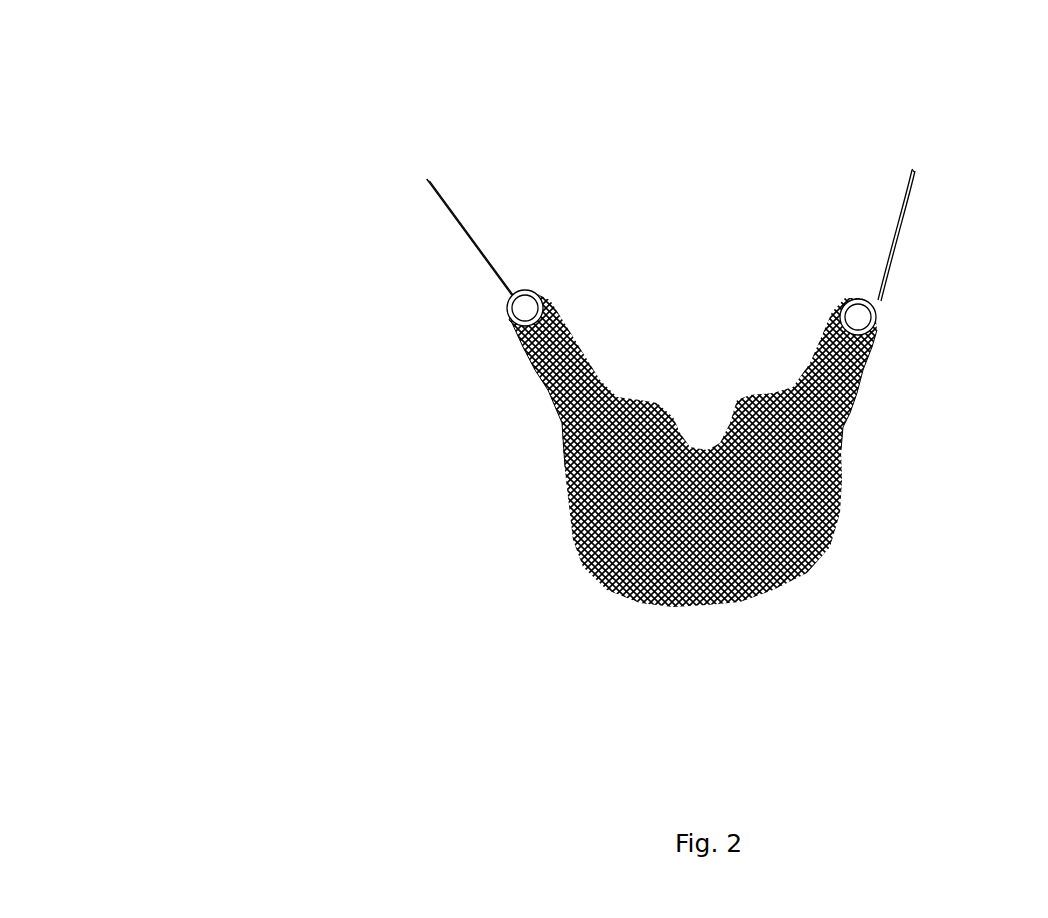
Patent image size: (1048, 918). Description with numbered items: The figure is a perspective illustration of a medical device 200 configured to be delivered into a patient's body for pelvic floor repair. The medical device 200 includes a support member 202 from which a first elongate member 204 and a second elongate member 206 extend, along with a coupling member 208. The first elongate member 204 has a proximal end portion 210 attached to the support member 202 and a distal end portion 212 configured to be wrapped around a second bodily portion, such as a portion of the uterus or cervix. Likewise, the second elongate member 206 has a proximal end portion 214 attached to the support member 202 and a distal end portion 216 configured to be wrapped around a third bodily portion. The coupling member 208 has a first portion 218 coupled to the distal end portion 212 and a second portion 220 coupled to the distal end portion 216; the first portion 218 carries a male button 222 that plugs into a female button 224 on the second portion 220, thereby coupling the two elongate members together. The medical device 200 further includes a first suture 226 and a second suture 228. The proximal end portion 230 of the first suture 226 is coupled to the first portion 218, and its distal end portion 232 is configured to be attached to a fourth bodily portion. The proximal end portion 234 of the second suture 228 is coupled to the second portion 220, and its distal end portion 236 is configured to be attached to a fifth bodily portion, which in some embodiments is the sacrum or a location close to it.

The medical device 200 is at (179, 117).
The support member 202 is at (685, 605).
The first elongate member 204 is at (548, 387).
The second elongate member 206 is at (855, 395).
The coupling member 208 is at (511, 314).
The proximal end portion 210 is at (565, 422).
The distal end portion 212 is at (523, 343).
The proximal end portion 214 is at (843, 425).
The distal end portion 216 is at (872, 343).
The first portion 218 is at (521, 290).
The second portion 220 is at (861, 299).
The male button 222 is at (507, 303).
The female button 224 is at (876, 313).
The first suture 226 is at (440, 213).
The second suture 228 is at (893, 235).
The proximal end portion 230 is at (495, 277).
The distal end portion 232 is at (428, 178).
The proximal end portion 234 is at (885, 283).
The distal end portion 236 is at (912, 168).